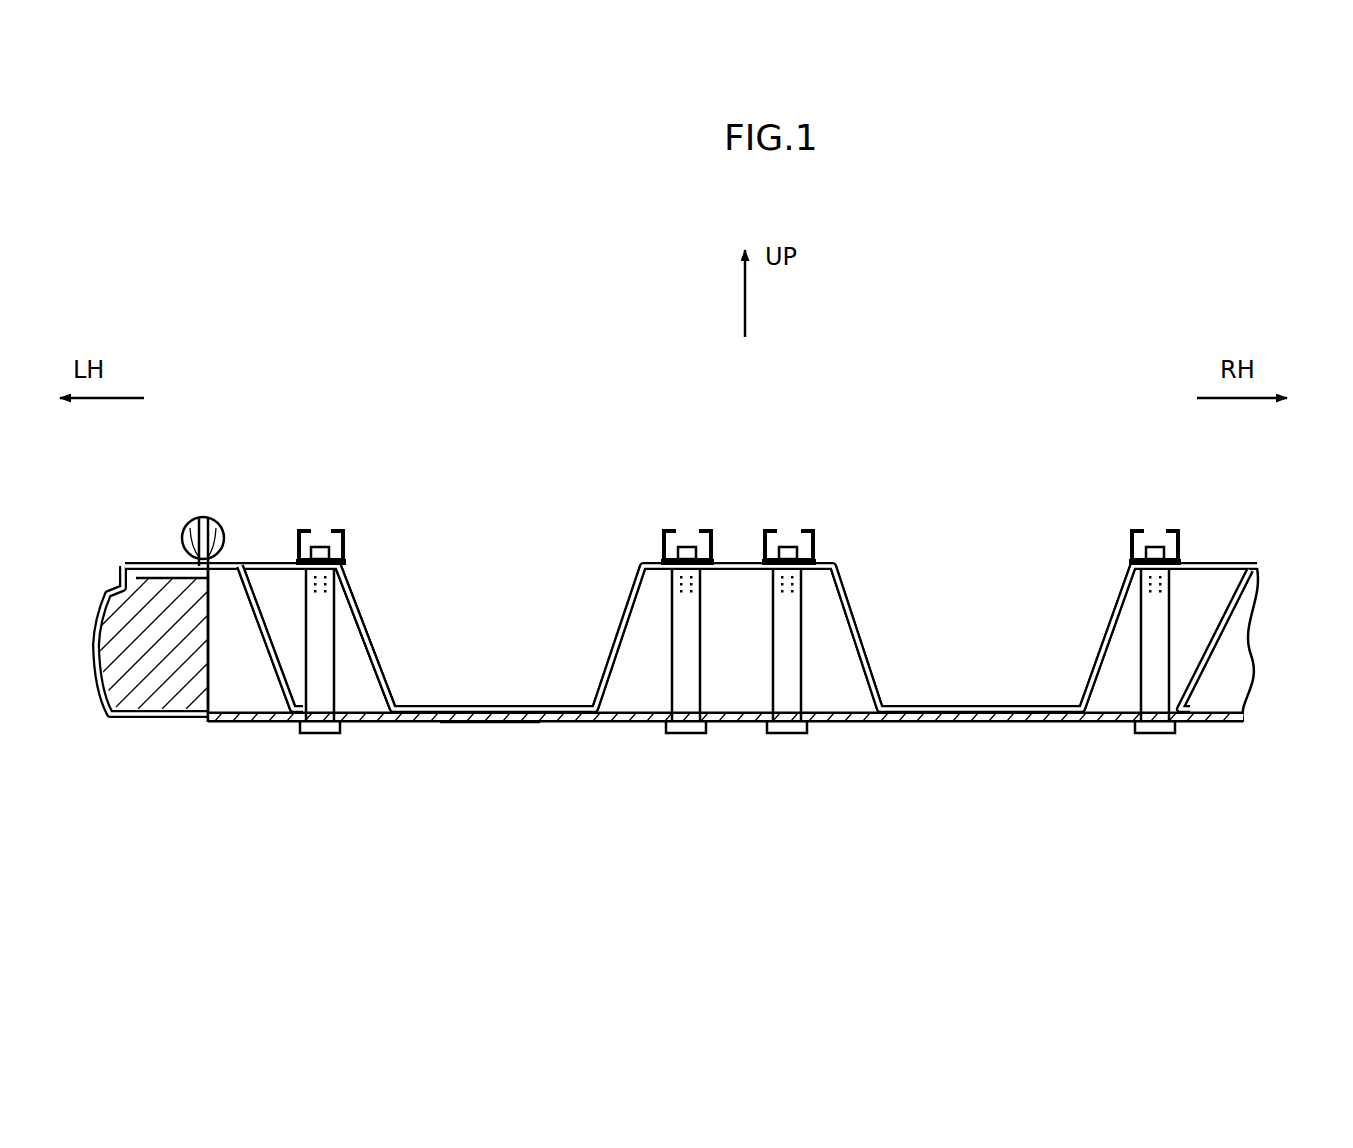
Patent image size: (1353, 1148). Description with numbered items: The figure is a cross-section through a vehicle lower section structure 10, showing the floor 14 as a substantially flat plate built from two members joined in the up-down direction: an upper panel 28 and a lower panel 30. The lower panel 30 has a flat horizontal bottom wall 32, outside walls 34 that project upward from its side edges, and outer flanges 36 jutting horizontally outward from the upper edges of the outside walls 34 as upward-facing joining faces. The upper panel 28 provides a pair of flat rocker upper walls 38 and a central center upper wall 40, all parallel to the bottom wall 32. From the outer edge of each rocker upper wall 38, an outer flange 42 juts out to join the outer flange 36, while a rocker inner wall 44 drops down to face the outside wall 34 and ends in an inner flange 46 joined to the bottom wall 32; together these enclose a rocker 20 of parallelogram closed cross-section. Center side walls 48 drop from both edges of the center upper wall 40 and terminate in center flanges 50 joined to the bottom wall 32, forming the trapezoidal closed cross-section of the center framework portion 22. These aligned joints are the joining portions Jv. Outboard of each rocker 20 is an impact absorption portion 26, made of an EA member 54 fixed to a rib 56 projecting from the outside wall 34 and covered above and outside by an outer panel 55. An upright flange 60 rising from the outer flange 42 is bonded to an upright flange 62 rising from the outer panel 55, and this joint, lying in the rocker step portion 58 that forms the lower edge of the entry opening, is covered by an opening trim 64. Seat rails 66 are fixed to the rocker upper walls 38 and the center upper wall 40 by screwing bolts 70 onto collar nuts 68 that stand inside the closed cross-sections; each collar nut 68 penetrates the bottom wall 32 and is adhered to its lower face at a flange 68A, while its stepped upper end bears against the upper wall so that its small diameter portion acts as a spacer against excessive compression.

The vehicle lower section structure 10 is at (992, 433).
The floor 14 is at (873, 542).
The rocker 20 is at (380, 561).
The center framework portion 22 is at (640, 555).
The impact absorption portion 26 is at (158, 652).
The upper panel 28 is at (370, 605).
The lower panel 30 is at (725, 767).
The bottom wall 32 is at (505, 722).
The outside wall 34 is at (258, 655).
The outer flange 36 is at (224, 580).
The rocker upper wall 38 is at (270, 573).
The center upper wall 40 is at (740, 573).
The outer flange 42 is at (233, 553).
The rocker inner wall 44 is at (373, 650).
The inner flange 46 is at (430, 705).
The center side wall 48 is at (619, 641).
The center flange 50 is at (567, 702).
The EA member 54 is at (188, 712).
The outer panel 55 is at (137, 558).
The rib 56 is at (263, 713).
The rocker step portion 58 is at (216, 489).
The upright flange 60 is at (221, 532).
The upright flange 62 is at (192, 518).
The opening trim 64 is at (215, 513).
The seat rail 66 is at (742, 499).
The collar nut 68 is at (756, 697).
The flange 68A is at (323, 732).
The bolt 70 is at (322, 546).
The joining portion Jv is at (245, 556).